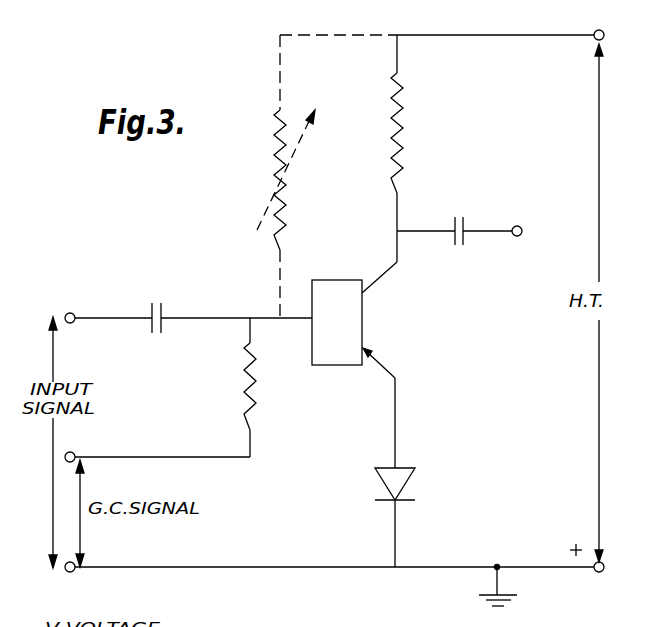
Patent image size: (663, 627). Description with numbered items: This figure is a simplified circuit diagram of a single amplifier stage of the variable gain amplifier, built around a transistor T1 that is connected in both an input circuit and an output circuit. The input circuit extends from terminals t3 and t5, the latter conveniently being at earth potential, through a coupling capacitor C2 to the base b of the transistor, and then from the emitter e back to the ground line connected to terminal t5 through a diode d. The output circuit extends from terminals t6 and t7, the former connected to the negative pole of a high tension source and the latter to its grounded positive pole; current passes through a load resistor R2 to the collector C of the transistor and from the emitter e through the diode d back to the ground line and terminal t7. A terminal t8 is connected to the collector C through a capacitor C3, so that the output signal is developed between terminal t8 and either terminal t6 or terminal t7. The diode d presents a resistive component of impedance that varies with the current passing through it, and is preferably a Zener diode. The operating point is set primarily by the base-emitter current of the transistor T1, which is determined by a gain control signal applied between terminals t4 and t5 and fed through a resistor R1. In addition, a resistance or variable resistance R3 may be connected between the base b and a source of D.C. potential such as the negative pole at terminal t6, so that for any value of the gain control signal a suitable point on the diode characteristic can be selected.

The terminal t3 is at (77, 304).
The terminal t4 is at (83, 444).
The terminal t5 is at (81, 582).
The terminal t6 is at (610, 32).
The terminal t7 is at (601, 585).
The terminal t8 is at (529, 227).
The coupling capacitor C2 is at (156, 298).
The capacitor C3 is at (461, 212).
The resistor R1 is at (165, 387).
The load resistor R2 is at (410, 148).
The variable resistance R3 is at (286, 176).
The transistor T1 is at (356, 322).
The base b is at (308, 319).
The collector C is at (383, 278).
The emitter e is at (383, 368).
The diode d is at (402, 517).